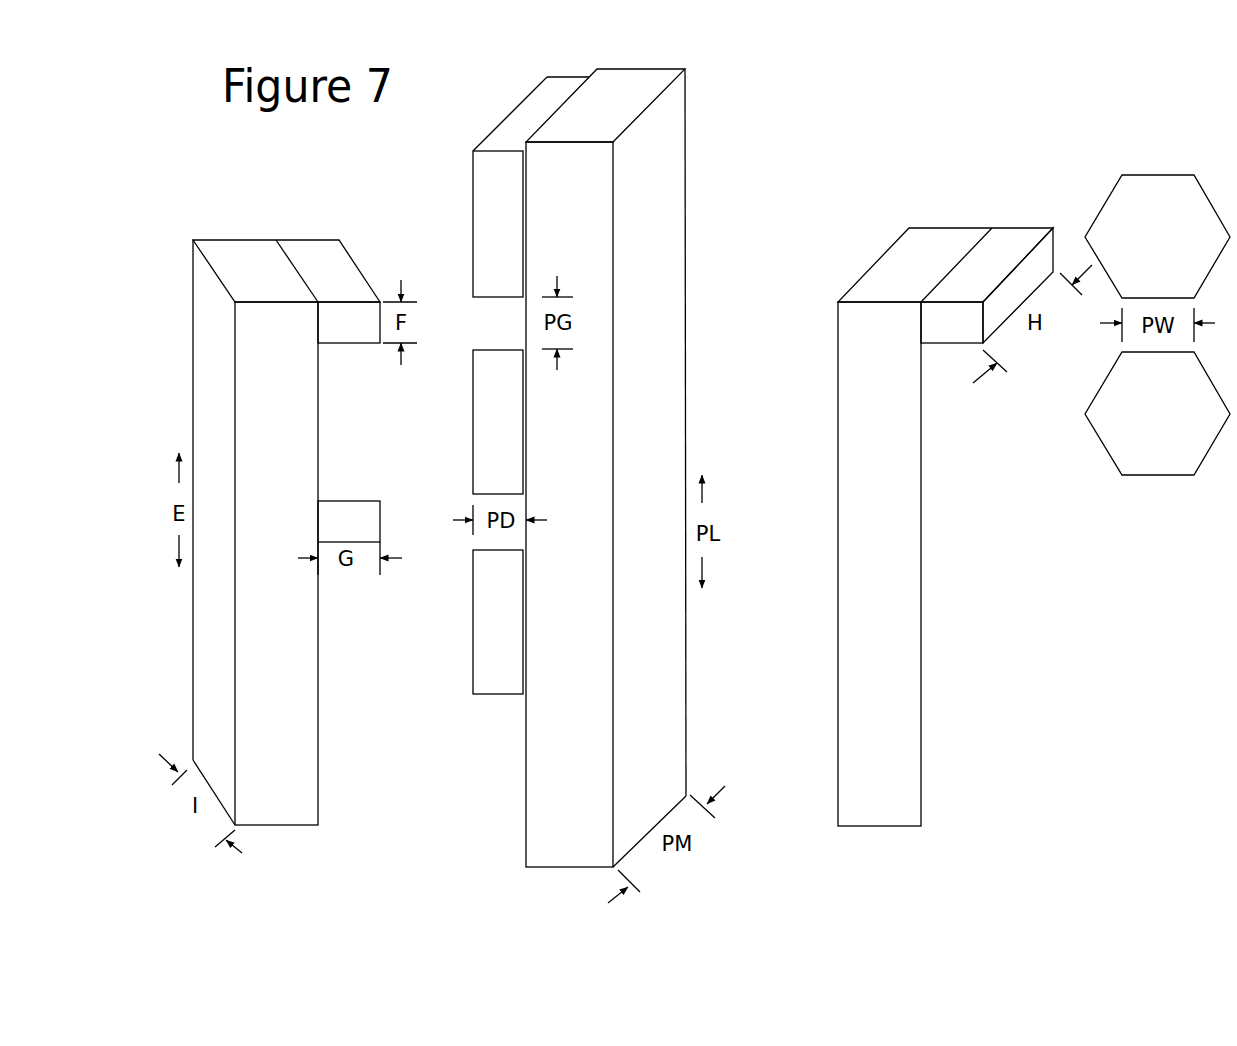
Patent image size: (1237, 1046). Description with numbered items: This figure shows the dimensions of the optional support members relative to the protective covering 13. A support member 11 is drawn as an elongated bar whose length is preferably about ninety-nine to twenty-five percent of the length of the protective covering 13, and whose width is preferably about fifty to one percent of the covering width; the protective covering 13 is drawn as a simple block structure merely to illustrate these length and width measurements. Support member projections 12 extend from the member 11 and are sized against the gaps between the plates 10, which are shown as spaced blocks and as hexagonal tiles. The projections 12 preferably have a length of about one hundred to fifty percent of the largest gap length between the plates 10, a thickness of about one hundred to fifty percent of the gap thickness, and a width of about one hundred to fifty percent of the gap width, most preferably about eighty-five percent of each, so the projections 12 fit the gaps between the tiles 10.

The plates 10 is at (851, 385).
The member 11 is at (623, 527).
The support member projections 12 is at (664, 385).
The protective covering 13 is at (606, 468).